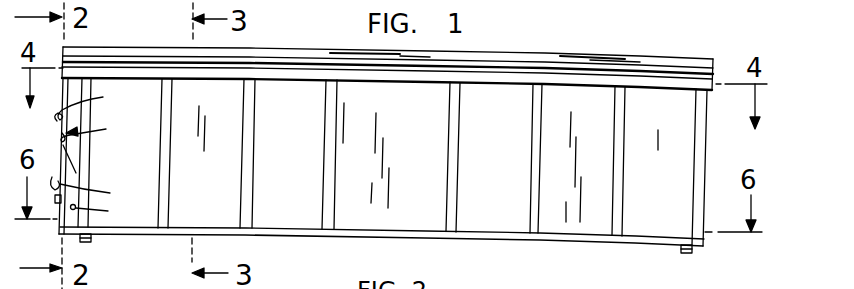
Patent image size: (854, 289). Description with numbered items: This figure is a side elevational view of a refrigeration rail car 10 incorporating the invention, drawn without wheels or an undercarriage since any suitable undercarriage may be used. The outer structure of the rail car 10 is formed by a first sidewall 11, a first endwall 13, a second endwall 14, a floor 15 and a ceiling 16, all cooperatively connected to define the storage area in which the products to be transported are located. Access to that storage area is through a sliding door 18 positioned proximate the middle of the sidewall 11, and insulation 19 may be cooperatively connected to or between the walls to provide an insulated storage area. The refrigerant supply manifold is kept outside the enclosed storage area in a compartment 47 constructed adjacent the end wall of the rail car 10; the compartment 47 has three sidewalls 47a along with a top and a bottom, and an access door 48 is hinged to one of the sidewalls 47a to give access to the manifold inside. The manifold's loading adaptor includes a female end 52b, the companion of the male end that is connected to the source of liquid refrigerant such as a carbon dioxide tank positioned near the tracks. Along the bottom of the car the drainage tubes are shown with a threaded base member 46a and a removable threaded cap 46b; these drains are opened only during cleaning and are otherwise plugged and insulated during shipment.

The refrigeration rail car 10 is at (653, 32).
The first sidewall 11 is at (284, 212).
The first endwall 13 is at (100, 130).
The second endwall 14 is at (714, 149).
The floor 15 is at (545, 246).
The ceiling 16 is at (492, 52).
The sliding door 18 is at (368, 208).
The insulation 19 is at (665, 283).
The threaded base member 46a is at (97, 236).
The removable threaded cap 46b is at (92, 244).
The compartment 47 is at (80, 175).
The sidewall 47a is at (103, 103).
The access door 48 is at (102, 196).
The female end 52b is at (105, 213).